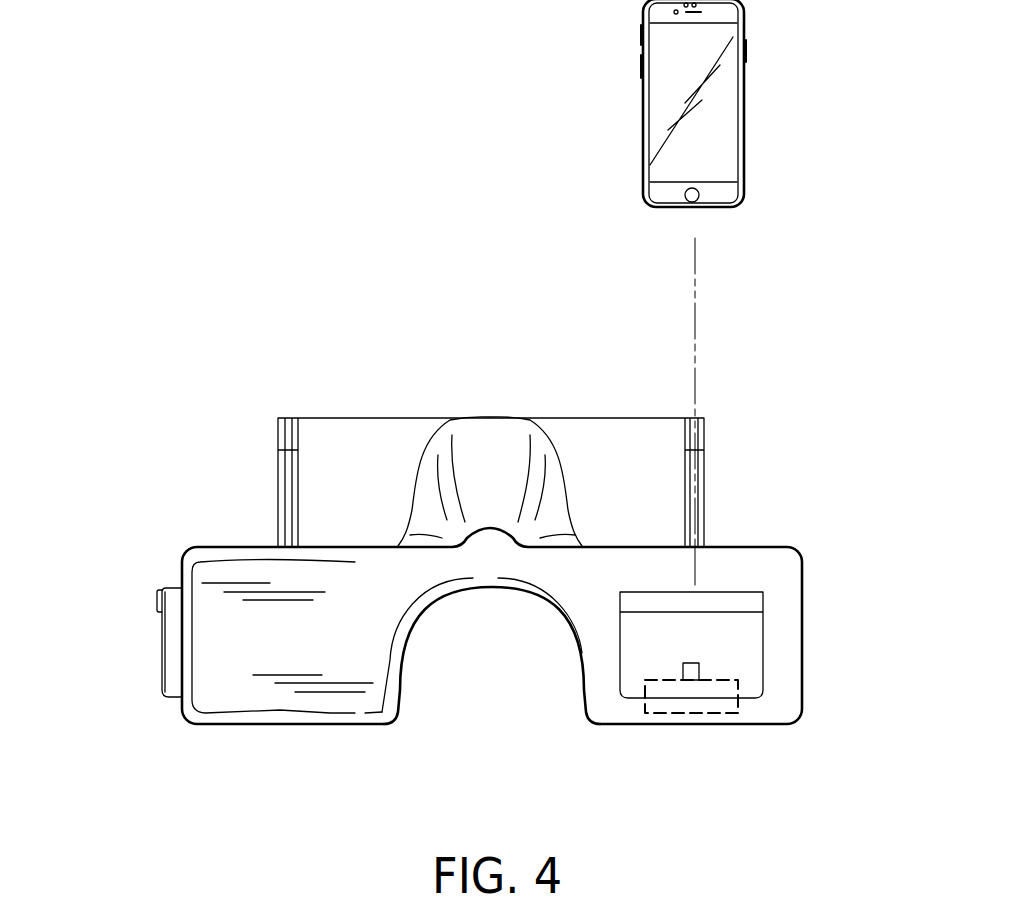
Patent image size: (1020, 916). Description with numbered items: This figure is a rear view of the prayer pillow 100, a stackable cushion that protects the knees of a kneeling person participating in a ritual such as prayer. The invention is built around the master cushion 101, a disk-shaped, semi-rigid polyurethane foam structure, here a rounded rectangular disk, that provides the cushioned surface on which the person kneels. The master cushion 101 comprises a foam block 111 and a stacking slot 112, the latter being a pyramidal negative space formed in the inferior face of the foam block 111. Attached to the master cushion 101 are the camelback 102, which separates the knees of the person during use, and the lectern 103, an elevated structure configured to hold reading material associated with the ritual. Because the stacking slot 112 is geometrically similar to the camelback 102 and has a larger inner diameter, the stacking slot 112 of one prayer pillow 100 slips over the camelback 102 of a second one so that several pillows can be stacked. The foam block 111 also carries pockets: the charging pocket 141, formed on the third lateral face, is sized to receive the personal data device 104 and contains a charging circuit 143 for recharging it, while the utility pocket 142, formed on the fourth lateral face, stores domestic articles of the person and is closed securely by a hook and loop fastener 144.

The prayer pillow 100 is at (200, 308).
The master cushion 101 is at (275, 724).
The camelback 102 is at (491, 445).
The lectern 103 is at (655, 473).
The personal data device 104 is at (745, 115).
The foam block 111 is at (340, 680).
The stacking slot 112 is at (493, 660).
The charging pocket 141 is at (763, 637).
The utility pocket 142 is at (162, 677).
The charging circuit 143 is at (690, 713).
The hook and loop fastener 144 is at (158, 598).